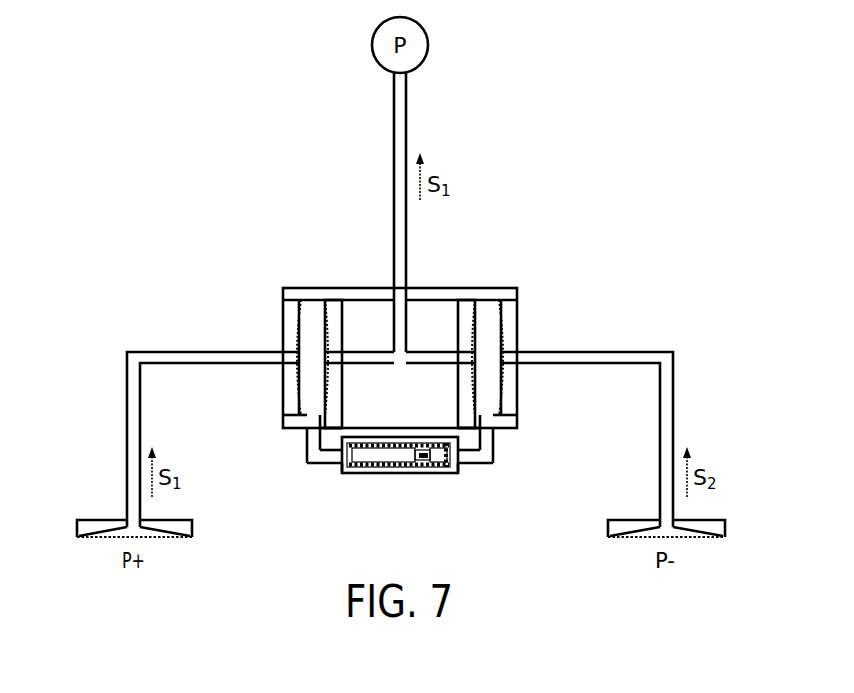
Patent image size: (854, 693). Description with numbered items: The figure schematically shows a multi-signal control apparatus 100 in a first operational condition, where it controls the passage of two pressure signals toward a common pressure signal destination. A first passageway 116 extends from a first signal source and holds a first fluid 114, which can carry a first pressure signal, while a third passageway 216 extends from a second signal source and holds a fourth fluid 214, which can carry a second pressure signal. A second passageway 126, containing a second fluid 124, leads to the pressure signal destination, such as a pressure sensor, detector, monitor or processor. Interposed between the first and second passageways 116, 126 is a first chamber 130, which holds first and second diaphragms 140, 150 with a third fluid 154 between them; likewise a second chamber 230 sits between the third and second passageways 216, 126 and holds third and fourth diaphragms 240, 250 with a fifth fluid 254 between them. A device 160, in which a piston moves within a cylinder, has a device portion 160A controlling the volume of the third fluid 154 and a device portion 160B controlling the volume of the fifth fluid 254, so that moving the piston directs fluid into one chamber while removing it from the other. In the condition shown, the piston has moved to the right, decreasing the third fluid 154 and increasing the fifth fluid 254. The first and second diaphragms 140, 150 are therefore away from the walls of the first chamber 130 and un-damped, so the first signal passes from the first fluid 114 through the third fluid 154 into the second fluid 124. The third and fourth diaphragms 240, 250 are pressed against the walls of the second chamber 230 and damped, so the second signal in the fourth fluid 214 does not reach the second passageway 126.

The apparatus 100 is at (204, 146).
The first fluid 114 is at (203, 364).
The first passageway 116 is at (197, 352).
The second fluid 124 is at (400, 153).
The second passageway 126 is at (393, 115).
The first chamber 130 is at (311, 312).
The first diaphragm 140 is at (299, 337).
The second diaphragm 150 is at (328, 335).
The third fluid 154 is at (313, 388).
The device 160 is at (365, 485).
The device portion 160A is at (334, 478).
The device portion 160B is at (468, 478).
The fourth fluid 214 is at (592, 364).
The third passageway 216 is at (590, 352).
The second chamber 230 is at (489, 312).
The third diaphragm 240 is at (501, 335).
The fourth diaphragm 250 is at (470, 335).
The fifth fluid 254 is at (487, 388).